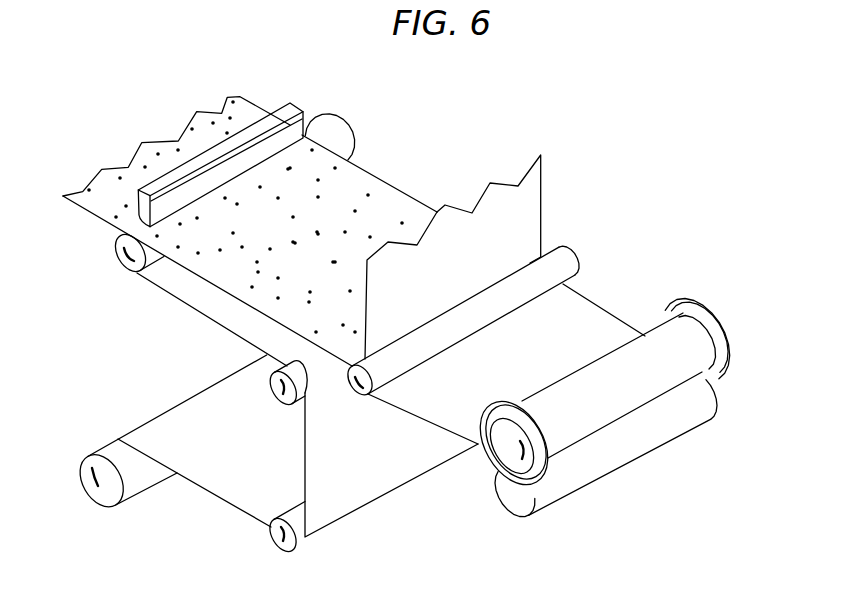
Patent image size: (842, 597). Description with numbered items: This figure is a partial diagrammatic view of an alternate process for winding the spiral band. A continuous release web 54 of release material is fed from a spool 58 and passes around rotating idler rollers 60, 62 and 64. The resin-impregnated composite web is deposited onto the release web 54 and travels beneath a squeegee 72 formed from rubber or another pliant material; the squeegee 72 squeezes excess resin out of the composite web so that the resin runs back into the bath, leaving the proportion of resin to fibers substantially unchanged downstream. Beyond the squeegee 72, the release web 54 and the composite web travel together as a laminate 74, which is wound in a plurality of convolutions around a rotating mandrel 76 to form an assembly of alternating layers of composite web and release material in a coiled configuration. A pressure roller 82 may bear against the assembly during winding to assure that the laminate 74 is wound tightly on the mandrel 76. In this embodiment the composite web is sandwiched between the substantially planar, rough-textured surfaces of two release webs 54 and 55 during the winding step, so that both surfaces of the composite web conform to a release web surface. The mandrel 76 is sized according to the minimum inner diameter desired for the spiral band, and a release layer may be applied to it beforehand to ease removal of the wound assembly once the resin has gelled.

The release web 54 is at (330, 437).
The release web 55 is at (531, 213).
The spool 58 is at (107, 506).
The idler roller 60 is at (273, 543).
The idler roller 62 is at (271, 395).
The idler roller 64 is at (137, 276).
The squeegee 72 is at (296, 110).
The laminate 74 is at (400, 213).
The mandrel 76 is at (528, 517).
The pressure roller 82 is at (618, 443).